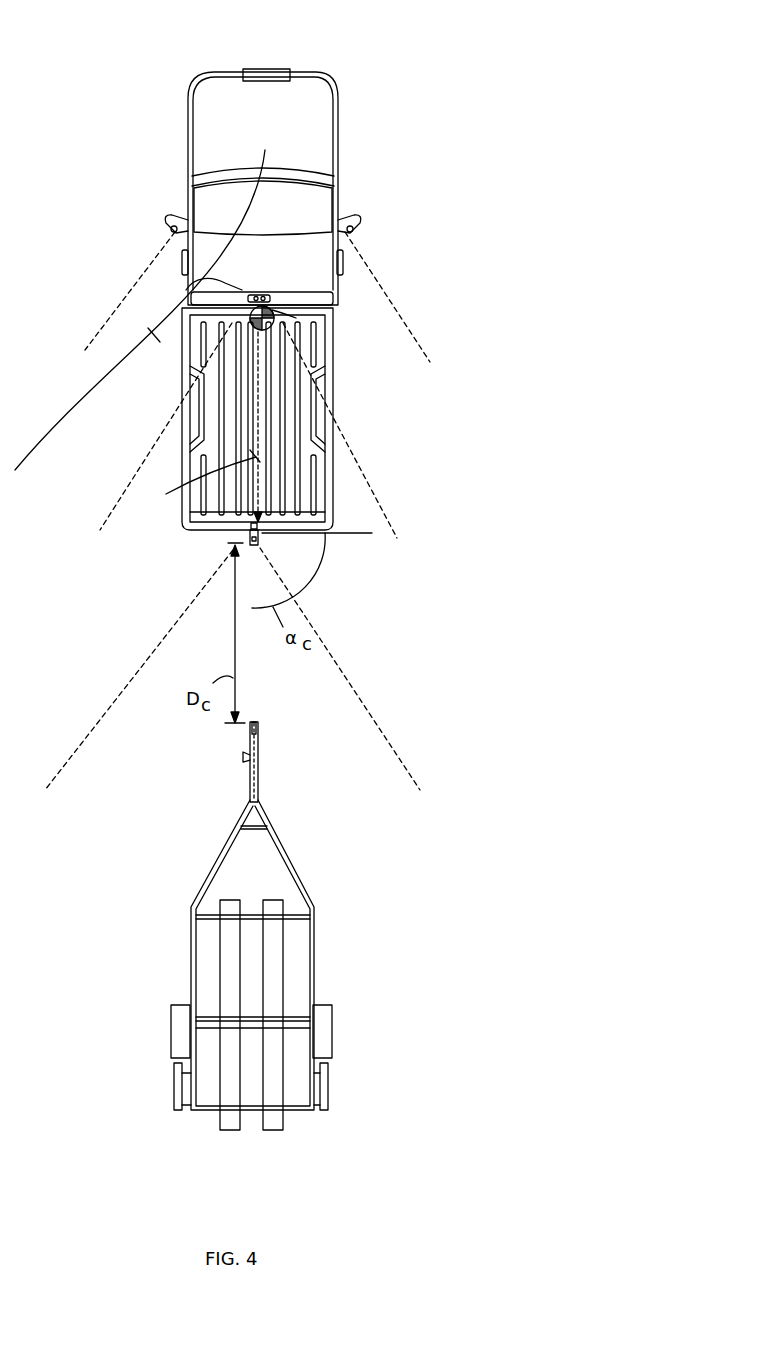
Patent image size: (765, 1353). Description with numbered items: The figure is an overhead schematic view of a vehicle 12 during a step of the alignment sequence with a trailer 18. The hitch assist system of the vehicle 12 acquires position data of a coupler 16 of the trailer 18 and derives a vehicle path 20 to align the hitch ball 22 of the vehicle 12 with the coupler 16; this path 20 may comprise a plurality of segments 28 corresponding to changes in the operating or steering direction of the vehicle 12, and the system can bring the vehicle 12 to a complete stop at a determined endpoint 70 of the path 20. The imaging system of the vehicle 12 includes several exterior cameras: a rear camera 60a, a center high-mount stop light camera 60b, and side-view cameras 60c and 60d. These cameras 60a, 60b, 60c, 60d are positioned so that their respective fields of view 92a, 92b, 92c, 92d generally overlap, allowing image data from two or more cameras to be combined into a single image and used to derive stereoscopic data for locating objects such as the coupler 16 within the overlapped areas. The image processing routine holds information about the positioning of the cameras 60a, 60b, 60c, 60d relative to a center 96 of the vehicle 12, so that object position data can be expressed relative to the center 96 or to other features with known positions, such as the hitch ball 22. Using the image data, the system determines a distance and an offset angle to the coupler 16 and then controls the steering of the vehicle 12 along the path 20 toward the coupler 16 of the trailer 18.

The vehicle 12 is at (342, 38).
The coupler 16 is at (258, 726).
The trailer 18 is at (200, 878).
The vehicle path 20 is at (268, 432).
The hitch ball 22 is at (250, 534).
The segments 28 is at (55, 402).
The rear camera 60a is at (259, 528).
The center high-mount stop light (CHMSL) camera 60b is at (263, 294).
The side-view camera 60c is at (352, 235).
The side-view camera 60d is at (170, 238).
The endpoint 70 is at (252, 517).
The field of view 92a is at (152, 657).
The field of view 92b is at (110, 512).
The field of view 92c is at (410, 320).
The field of view 92d is at (98, 330).
The center 96 is at (306, 318).